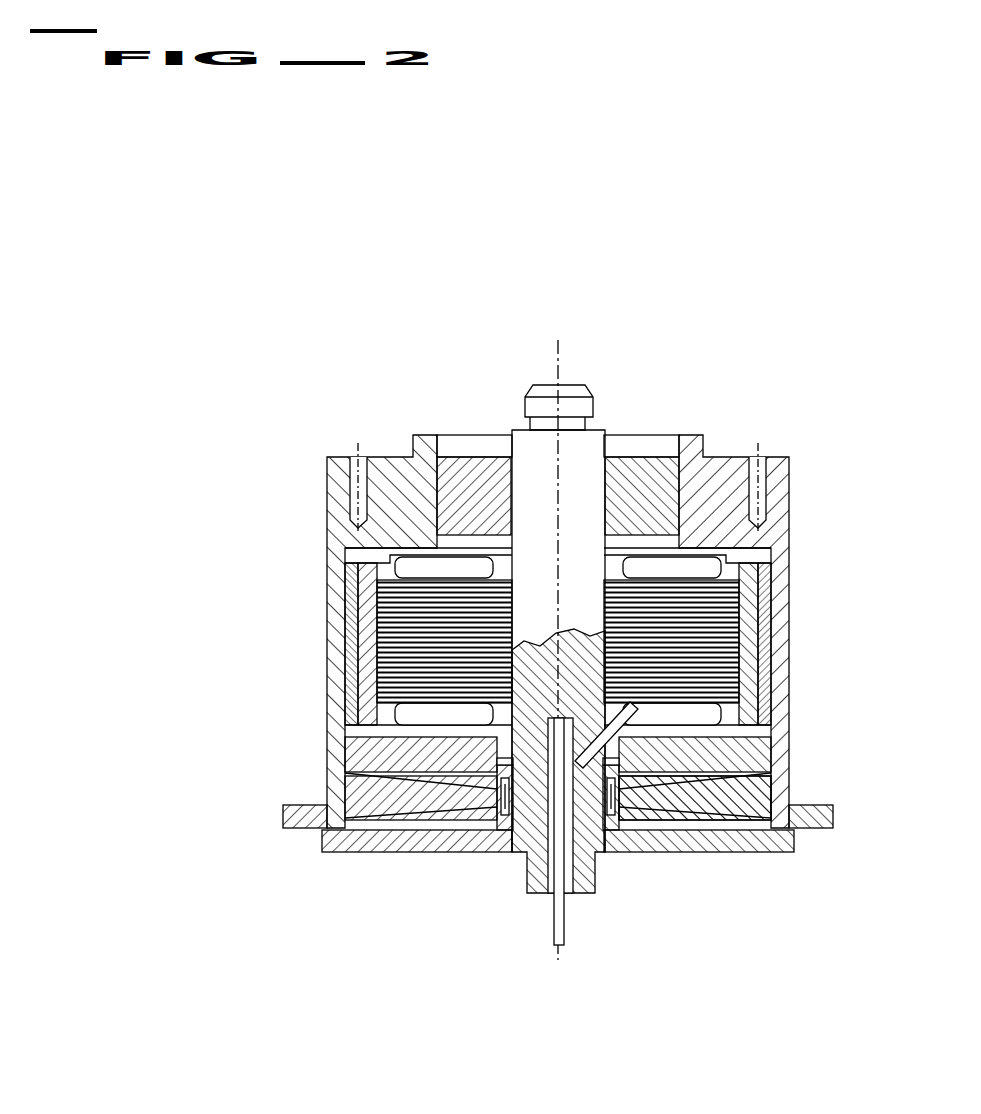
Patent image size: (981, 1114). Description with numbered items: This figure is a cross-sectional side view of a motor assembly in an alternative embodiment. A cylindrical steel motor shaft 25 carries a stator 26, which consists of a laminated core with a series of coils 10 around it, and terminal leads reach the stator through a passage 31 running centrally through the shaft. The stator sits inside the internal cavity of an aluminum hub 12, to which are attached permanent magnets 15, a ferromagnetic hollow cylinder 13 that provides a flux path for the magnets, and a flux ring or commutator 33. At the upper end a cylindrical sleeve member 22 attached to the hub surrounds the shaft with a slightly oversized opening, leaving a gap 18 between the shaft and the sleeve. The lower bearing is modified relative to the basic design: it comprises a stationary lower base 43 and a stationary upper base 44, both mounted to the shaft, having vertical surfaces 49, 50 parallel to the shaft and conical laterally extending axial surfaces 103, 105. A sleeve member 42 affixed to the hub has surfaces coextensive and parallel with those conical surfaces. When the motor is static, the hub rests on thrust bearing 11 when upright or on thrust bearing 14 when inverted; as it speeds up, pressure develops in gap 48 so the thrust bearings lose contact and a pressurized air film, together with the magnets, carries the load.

The coils 10 is at (705, 715).
The thrust bearing 11 is at (506, 800).
The hub 12 is at (790, 493).
The hollow cylinder 13 is at (772, 572).
The thrust bearing 14 is at (345, 732).
The permanent magnets 15 is at (782, 578).
The gap 18 is at (600, 479).
The cylindrical sleeve member 22 is at (457, 475).
The motor shaft 25 is at (545, 386).
The stator 26 is at (738, 626).
The passage 31 is at (582, 893).
The flux ring or commutator 33 is at (298, 830).
The sleeve member 42 is at (765, 790).
The lower base 43 is at (420, 845).
The upper base 44 is at (355, 765).
The gap 48 is at (357, 852).
The vertical surface 49 is at (657, 845).
The vertical surface 50 is at (492, 822).
The laterally extending axial surface 103 is at (770, 852).
The laterally extending axial surface 105 is at (700, 770).